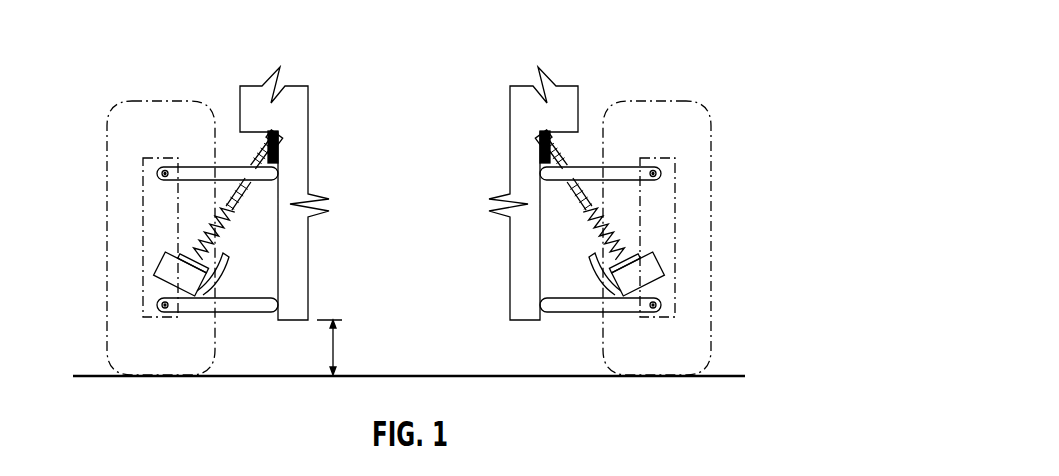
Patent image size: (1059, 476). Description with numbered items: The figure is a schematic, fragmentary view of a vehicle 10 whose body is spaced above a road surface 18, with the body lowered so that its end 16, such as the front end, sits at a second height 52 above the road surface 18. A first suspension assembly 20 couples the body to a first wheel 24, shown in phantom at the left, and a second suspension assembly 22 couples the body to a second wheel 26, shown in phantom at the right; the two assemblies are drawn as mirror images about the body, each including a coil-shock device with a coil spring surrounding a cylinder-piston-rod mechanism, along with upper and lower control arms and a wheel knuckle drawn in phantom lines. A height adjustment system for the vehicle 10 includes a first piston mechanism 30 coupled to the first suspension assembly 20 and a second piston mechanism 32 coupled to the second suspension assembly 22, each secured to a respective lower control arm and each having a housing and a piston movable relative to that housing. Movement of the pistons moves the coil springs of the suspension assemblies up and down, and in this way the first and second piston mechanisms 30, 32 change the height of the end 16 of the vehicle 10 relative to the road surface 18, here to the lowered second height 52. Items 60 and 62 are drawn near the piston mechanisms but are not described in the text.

The vehicle 10 is at (704, 45).
The end 16 is at (526, 318).
The road surface 18 is at (418, 374).
The first suspension assembly 20 is at (229, 113).
The second suspension assembly 22 is at (590, 112).
The first wheel 24 is at (100, 293).
The second wheel 26 is at (715, 323).
The first piston mechanism 30 is at (208, 284).
The second piston mechanism 32 is at (665, 273).
The second height 52 is at (337, 356).
The release lever 60 is at (223, 256).
The release lever 62 is at (591, 252).